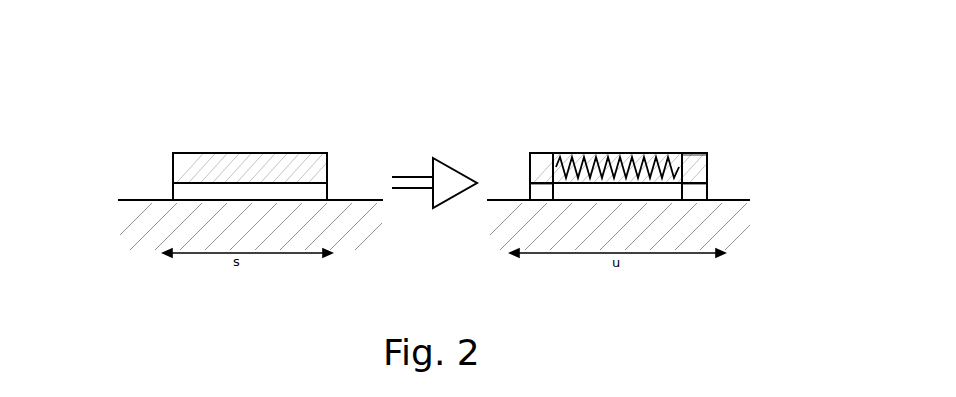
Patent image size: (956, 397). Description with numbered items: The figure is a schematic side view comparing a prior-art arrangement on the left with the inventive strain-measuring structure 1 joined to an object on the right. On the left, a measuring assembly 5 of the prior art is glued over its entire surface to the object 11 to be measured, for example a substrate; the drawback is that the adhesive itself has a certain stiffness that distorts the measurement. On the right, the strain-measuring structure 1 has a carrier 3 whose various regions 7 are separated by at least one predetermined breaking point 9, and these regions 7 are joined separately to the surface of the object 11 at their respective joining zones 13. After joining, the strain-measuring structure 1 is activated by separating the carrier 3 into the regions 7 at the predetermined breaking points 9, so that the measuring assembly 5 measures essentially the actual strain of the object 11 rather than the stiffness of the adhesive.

The strain-measuring structure 1 is at (689, 150).
The carrier 3 is at (710, 167).
The measuring assembly 5 is at (204, 165).
The region 7 is at (529, 160).
The predetermined breaking point 9 is at (624, 167).
The object 11 is at (131, 224).
The joining zone 13 is at (529, 183).